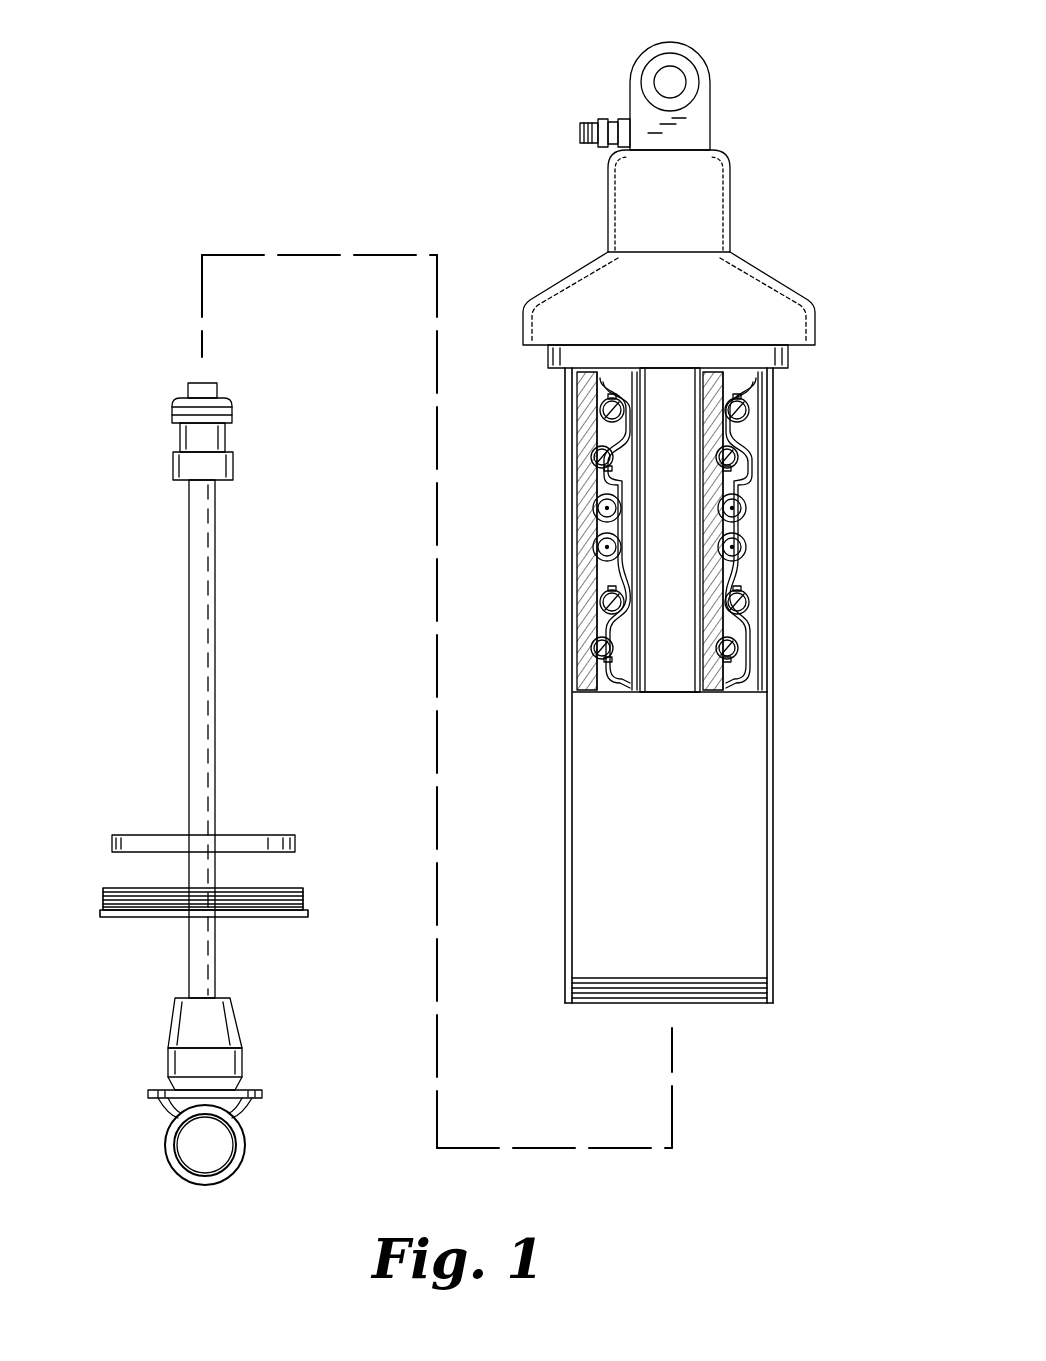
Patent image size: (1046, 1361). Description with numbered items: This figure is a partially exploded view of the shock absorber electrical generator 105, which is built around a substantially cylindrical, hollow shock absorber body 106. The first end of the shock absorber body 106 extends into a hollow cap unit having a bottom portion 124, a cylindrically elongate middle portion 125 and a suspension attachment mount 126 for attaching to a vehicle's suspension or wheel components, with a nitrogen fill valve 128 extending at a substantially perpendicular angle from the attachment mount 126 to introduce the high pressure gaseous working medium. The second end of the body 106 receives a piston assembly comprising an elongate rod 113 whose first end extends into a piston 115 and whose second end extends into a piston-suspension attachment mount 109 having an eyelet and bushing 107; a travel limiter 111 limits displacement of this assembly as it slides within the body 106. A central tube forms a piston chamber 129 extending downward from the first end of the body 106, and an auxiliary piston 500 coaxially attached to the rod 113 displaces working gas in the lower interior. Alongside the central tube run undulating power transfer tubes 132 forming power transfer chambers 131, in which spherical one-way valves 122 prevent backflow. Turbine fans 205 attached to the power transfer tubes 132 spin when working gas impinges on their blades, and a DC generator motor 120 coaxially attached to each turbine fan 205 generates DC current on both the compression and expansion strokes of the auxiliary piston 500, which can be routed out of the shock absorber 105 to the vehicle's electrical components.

The shock absorber electrical generator 105 is at (338, 108).
The shock absorber body 106 is at (206, 784).
The eyelet and bushing 107 is at (165, 1160).
The piston-suspension attachment mount 109 is at (148, 1094).
The travel limiter 111 is at (168, 1033).
The rod 113 is at (189, 641).
The piston 115 is at (173, 467).
The DC generator motor 120 is at (598, 522).
The one-way valve 122 is at (762, 588).
The bottom portion 124 is at (790, 278).
The middle portion 125 is at (733, 190).
The suspension attachment mount 126 is at (702, 53).
The nitrogen fill valve 128 is at (580, 125).
The piston chamber 129 is at (673, 600).
The power transfer chamber 131 is at (697, 678).
The power transfer tube 132 is at (590, 490).
The turbine fan 205 is at (598, 505).
The auxiliary piston 500 is at (287, 835).